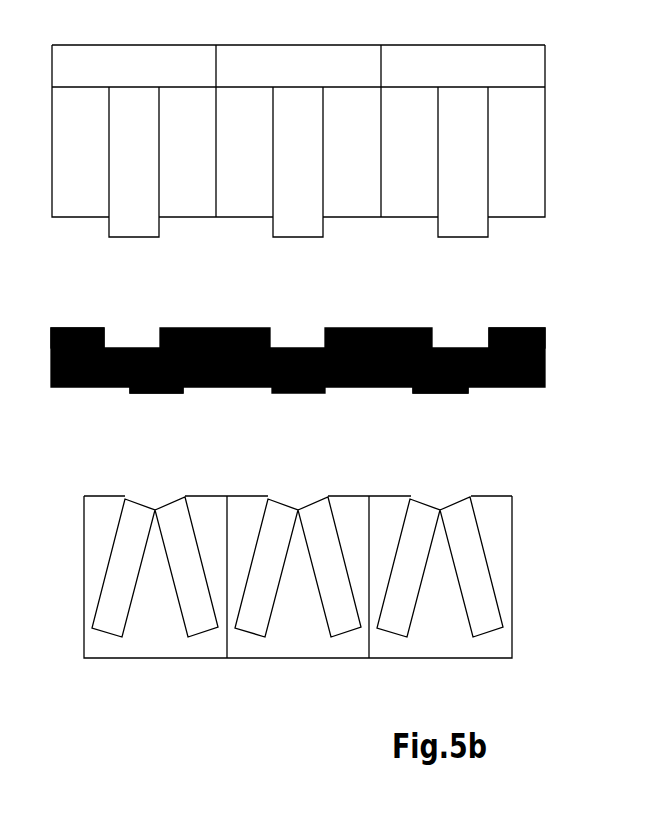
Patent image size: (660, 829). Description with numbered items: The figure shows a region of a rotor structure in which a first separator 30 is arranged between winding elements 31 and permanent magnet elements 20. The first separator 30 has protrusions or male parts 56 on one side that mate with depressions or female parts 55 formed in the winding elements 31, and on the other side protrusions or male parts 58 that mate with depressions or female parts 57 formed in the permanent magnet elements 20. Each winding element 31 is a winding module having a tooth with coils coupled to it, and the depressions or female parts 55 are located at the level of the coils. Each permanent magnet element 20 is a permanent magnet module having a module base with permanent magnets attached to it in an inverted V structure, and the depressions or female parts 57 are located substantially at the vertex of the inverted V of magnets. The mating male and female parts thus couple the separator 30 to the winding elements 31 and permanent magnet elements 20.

The winding element 31 is at (335, 169).
The depressions or female parts 55 is at (80, 228).
The protrusions or male parts 56 is at (70, 328).
The first separator 30 is at (343, 362).
The protrusions or male parts 58 is at (157, 393).
The depressions or female parts 57 is at (155, 492).
The permanent magnet element 20 is at (345, 545).